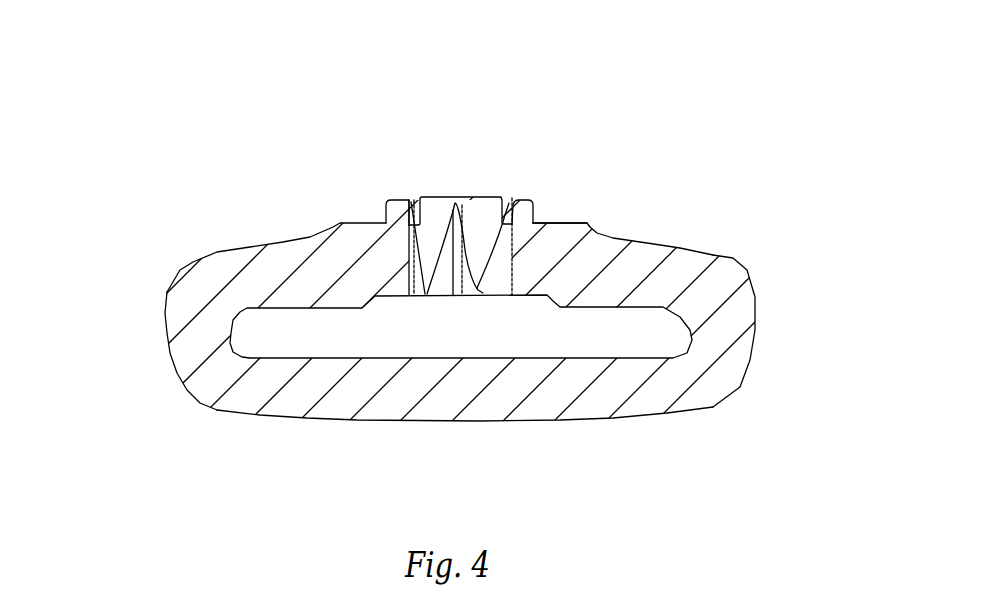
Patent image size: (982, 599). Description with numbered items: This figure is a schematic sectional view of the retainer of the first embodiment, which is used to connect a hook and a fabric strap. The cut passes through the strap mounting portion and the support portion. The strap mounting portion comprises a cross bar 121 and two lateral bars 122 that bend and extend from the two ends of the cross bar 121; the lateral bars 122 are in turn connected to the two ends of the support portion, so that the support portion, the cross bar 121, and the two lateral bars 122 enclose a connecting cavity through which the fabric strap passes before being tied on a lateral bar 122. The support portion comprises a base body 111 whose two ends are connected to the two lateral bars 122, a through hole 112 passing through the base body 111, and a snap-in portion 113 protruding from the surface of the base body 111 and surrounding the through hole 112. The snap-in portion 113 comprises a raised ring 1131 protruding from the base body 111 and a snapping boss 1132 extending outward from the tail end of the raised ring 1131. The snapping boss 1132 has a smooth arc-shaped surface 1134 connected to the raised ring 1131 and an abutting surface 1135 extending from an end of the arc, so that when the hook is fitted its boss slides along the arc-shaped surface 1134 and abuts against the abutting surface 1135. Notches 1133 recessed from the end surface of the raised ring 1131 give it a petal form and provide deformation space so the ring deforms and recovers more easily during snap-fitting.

The base body 111 is at (359, 238).
The through hole 112 is at (447, 197).
The snap-in portion 113 is at (397, 198).
The raised ring 1131 is at (515, 203).
The snapping boss 1132 is at (622, 165).
The notch 1133 is at (508, 203).
The arc-shaped surface 1134 is at (535, 210).
The abutting surface 1135 is at (541, 218).
The cross bar 121 is at (437, 410).
The lateral bar 122 is at (177, 350).